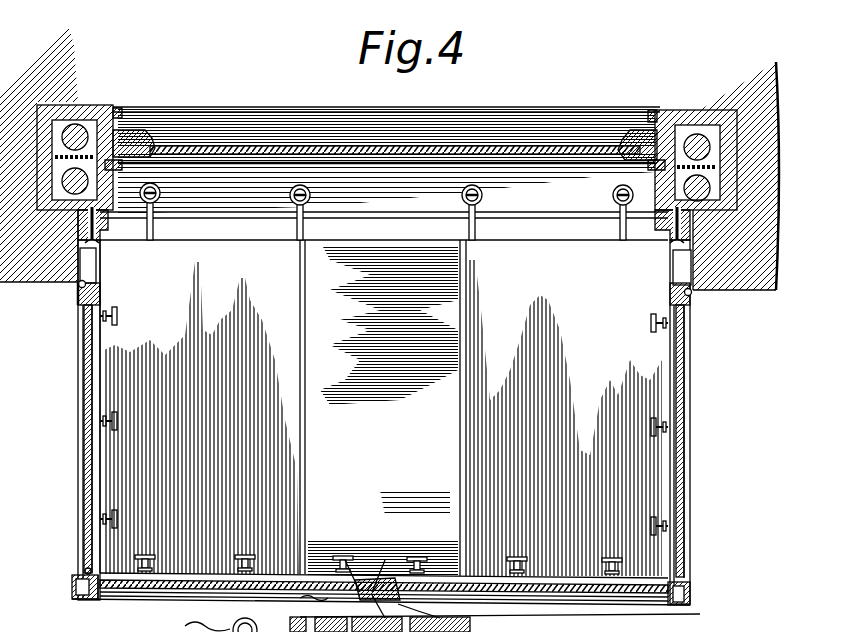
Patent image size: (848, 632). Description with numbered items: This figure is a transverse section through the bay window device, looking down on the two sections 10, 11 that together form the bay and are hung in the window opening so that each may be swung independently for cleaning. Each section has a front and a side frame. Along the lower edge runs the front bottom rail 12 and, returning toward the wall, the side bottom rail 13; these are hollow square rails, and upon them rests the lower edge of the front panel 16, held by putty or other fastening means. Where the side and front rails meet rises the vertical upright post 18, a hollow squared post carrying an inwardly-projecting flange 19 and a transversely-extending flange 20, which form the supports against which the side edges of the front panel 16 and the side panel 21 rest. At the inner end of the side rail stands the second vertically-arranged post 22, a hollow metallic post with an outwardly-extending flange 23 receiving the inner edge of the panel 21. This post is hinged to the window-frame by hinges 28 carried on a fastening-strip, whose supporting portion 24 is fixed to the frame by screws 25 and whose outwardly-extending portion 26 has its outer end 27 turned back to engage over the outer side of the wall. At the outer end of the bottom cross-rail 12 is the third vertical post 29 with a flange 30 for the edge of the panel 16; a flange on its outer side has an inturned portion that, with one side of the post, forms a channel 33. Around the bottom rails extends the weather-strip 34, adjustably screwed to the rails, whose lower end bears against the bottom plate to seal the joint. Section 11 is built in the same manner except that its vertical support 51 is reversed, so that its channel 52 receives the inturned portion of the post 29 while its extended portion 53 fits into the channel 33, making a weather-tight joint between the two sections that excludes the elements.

The section 10 is at (60, 420).
The section 11 is at (738, 504).
The front bottom rail 12 is at (172, 592).
The side bottom rail 13 is at (82, 435).
The panel 16 is at (183, 583).
The vertical upright post 18 is at (82, 600).
The inwardly-projecting flange 19 is at (89, 571).
The transversely-extending flange 20 is at (98, 594).
The panel 21 is at (92, 475).
The second vertically-arranged post 22 is at (83, 299).
The outwardly-extending flange 23 is at (106, 168).
The supporting portion 24 is at (100, 240).
The screws 25 is at (104, 312).
The outwardly-extending portion 26 is at (78, 283).
The outer end 27 is at (77, 288).
The hinges 28 is at (86, 282).
The third vertical post 29 is at (358, 598).
The flange 30 is at (352, 588).
The channel 33 is at (315, 600).
The weather-strip 34 is at (100, 373).
The vertical support 51 is at (398, 604).
The channel 52 is at (380, 595).
The extended portion 53 is at (378, 592).